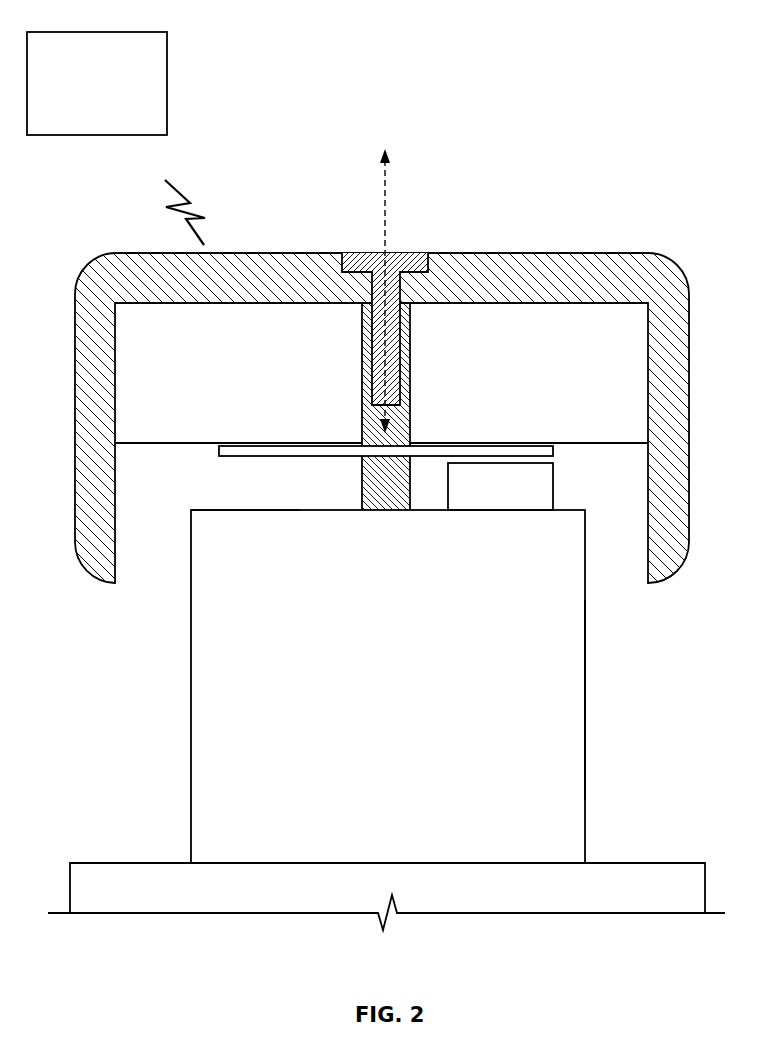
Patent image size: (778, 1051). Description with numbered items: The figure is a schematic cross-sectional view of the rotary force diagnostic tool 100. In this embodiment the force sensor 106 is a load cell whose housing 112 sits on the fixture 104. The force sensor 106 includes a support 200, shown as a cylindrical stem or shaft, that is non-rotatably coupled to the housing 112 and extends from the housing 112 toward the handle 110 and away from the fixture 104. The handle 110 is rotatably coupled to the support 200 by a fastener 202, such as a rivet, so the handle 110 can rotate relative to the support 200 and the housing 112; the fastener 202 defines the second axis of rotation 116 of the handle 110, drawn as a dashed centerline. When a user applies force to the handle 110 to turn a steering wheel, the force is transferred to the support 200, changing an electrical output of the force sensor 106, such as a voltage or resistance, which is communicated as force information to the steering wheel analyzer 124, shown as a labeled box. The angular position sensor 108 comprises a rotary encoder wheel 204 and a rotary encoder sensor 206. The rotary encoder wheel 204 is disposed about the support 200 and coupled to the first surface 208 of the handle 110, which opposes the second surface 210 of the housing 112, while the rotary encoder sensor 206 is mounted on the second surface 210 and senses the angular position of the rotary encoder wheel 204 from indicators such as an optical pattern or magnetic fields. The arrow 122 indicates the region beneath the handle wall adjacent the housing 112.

The rotary force diagnostic tool 100 is at (533, 119).
The fixture 104 is at (127, 863).
The force sensor 106 is at (190, 697).
The angular position sensor 108 is at (640, 478).
The handle 110 is at (595, 253).
The housing 112 is at (567, 712).
The second axis of rotation 116 is at (383, 192).
The space under cap wall 122 is at (167, 518).
The steering wheel analyzer 124 is at (82, 32).
The support 200 is at (371, 492).
The fastener 202 is at (408, 253).
The rotary encoder wheel 204 is at (557, 448).
The rotary encoder sensor 206 is at (557, 482).
The first surface 208 is at (153, 446).
The second surface 210 is at (247, 509).